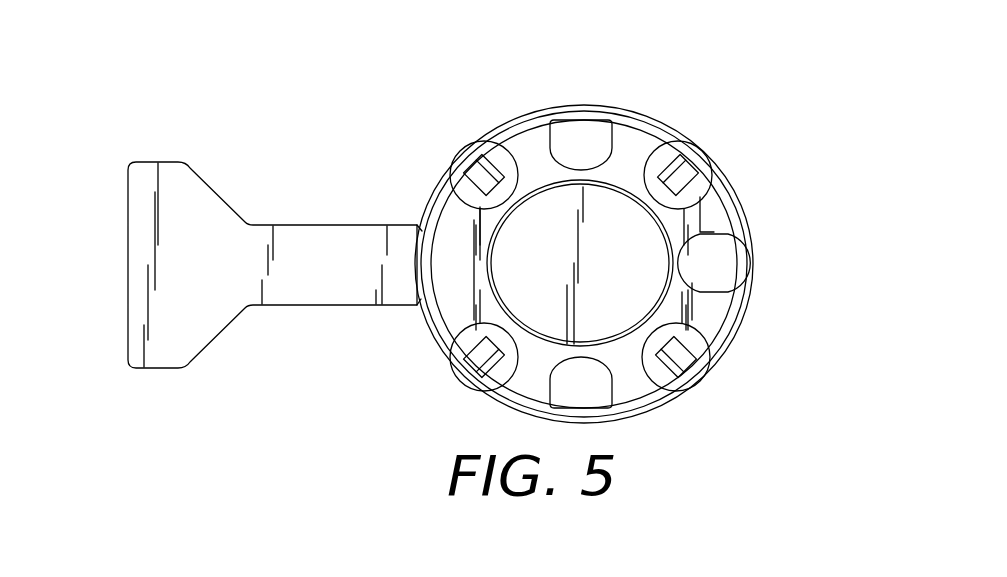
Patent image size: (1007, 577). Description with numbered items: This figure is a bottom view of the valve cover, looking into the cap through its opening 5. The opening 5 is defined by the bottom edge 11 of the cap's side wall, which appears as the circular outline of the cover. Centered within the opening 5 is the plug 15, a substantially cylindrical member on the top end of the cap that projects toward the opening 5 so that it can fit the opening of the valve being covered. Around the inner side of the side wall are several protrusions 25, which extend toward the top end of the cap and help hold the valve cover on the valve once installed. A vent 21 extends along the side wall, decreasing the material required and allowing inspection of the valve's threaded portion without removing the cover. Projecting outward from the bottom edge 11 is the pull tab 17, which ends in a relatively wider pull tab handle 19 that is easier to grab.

The opening 5 is at (628, 167).
The bottom edge 11 is at (743, 206).
The plug 15 is at (548, 220).
The pull tab 17 is at (303, 315).
The pull tab handle 19 is at (158, 163).
The vents 21 is at (745, 270).
The protrusions 25 is at (478, 167).